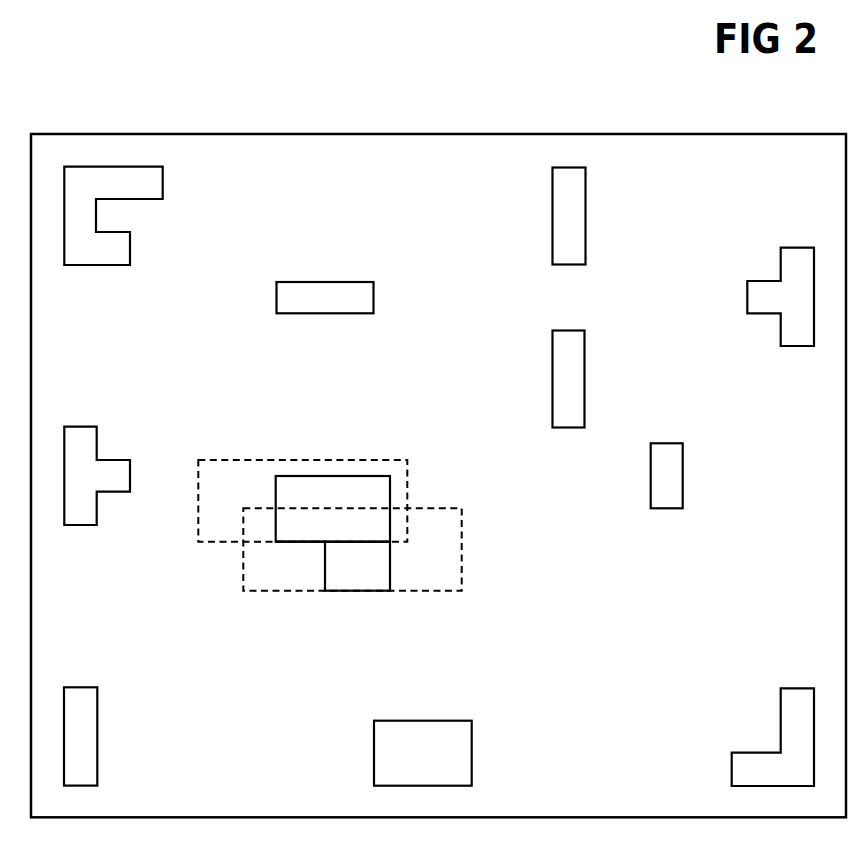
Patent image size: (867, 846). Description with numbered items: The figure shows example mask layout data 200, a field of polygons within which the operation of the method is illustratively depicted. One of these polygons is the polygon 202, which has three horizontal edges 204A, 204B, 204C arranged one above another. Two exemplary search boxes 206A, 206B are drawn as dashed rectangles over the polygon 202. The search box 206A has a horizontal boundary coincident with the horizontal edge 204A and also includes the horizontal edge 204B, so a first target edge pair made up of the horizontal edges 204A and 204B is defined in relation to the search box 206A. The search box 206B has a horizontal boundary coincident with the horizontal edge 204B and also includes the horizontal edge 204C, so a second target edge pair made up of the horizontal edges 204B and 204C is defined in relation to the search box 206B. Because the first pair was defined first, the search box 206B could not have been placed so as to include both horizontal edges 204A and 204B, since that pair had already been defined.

The mask layout data 200 is at (822, 166).
The polygon 202 is at (358, 485).
The horizontal edge 204A is at (353, 592).
The horizontal edge 204B is at (296, 542).
The horizontal edge 204C is at (296, 476).
The search box 206A is at (462, 530).
The search box 206B is at (407, 486).